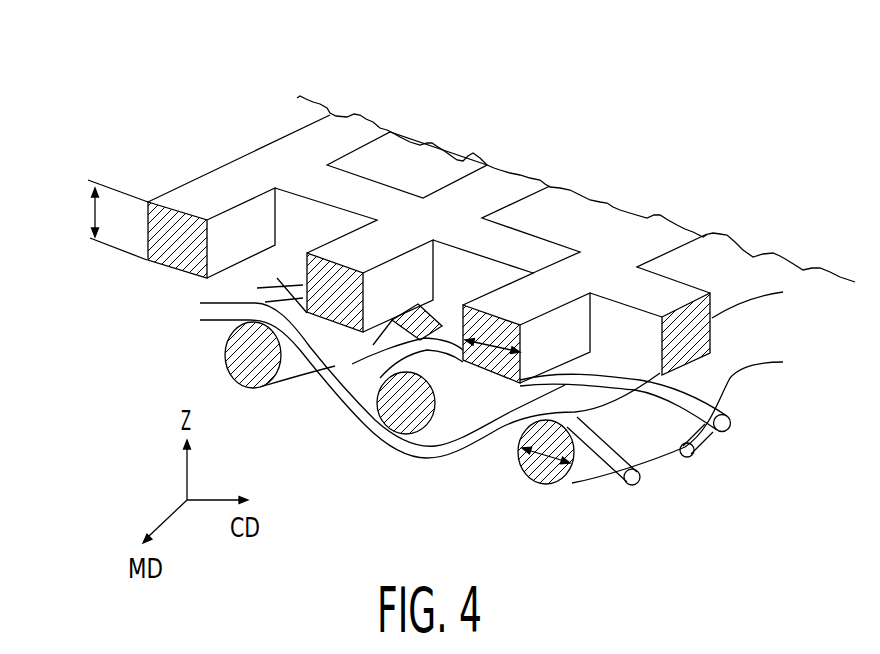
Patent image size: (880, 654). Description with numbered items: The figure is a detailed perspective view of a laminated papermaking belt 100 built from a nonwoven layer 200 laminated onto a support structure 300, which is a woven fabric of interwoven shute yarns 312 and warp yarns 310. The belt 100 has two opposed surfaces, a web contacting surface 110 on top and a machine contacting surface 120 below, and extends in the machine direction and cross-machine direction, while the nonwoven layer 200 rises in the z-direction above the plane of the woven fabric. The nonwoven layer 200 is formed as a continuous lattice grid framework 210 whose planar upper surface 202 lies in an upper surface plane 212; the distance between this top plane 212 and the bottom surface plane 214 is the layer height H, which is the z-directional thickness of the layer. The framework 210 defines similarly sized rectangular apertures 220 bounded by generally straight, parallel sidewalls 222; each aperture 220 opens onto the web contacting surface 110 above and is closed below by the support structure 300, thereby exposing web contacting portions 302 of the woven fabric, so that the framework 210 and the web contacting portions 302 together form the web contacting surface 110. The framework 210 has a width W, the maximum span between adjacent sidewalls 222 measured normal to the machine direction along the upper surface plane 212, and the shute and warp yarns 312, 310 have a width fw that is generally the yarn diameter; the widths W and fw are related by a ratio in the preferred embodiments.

The laminated belt 100 is at (234, 110).
The web contacting surface 110 is at (425, 158).
The machine contacting surface 120 is at (595, 506).
The nonwoven layer 200 is at (718, 257).
The upper surface 202 is at (273, 163).
The lattice grid framework 210 is at (662, 233).
The upper surface plane 212 is at (116, 190).
The bottom surface plane 214 is at (118, 249).
The apertures 220 is at (285, 259).
The sidewalls 222 is at (230, 257).
The support structure 300 is at (733, 457).
The web contacting portions 302 is at (432, 300).
The warp yarns 310 is at (527, 470).
The shute yarns 312 is at (433, 450).
The layer height H is at (93, 215).
The width W is at (483, 348).
The yarn width fw is at (546, 458).